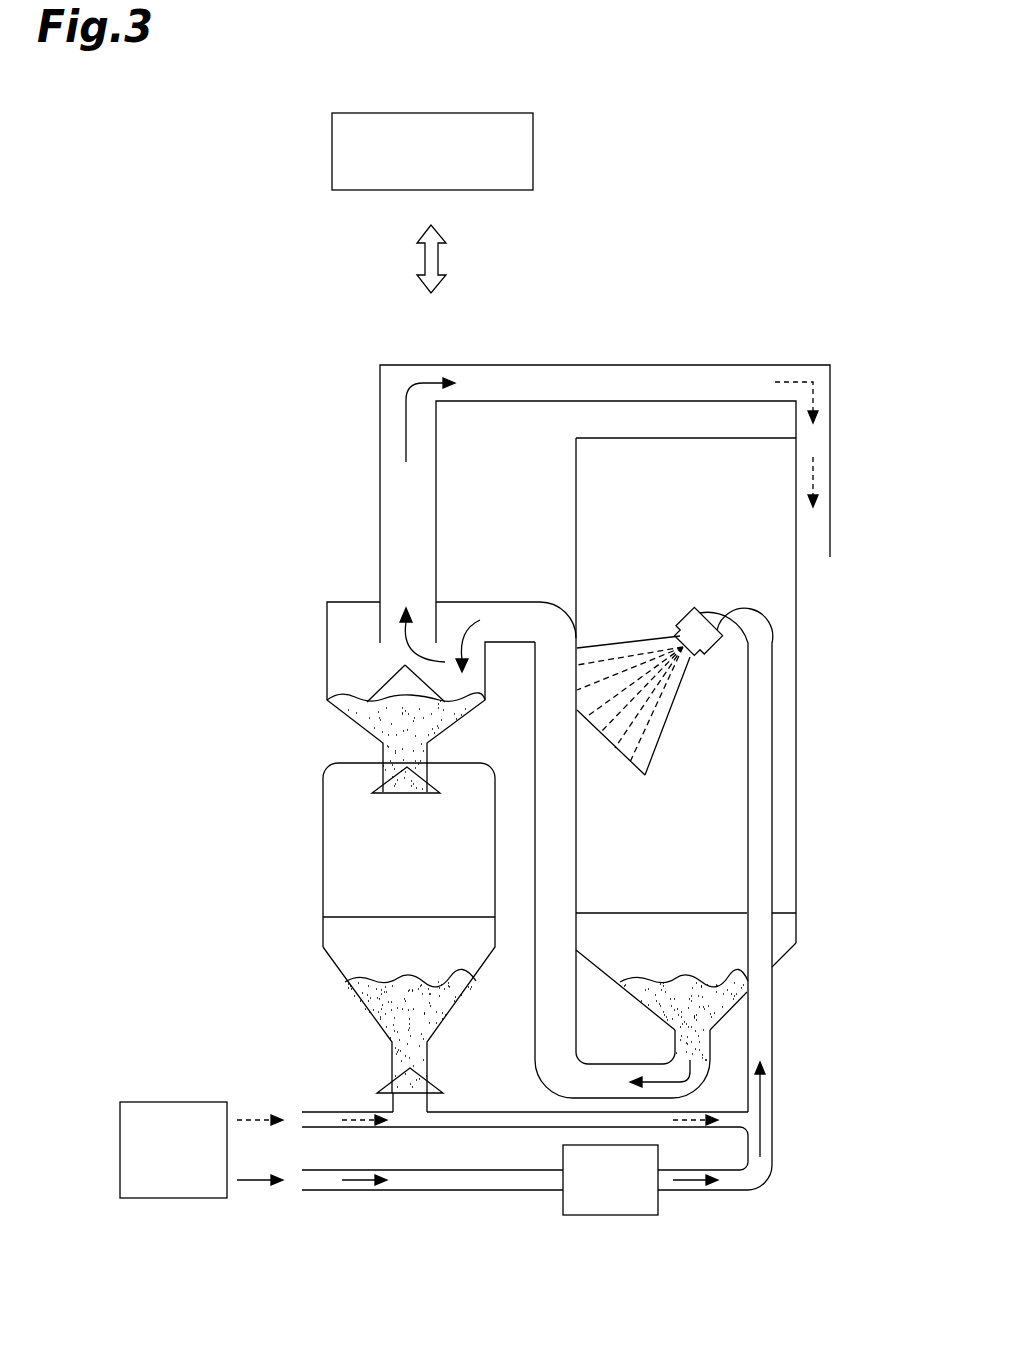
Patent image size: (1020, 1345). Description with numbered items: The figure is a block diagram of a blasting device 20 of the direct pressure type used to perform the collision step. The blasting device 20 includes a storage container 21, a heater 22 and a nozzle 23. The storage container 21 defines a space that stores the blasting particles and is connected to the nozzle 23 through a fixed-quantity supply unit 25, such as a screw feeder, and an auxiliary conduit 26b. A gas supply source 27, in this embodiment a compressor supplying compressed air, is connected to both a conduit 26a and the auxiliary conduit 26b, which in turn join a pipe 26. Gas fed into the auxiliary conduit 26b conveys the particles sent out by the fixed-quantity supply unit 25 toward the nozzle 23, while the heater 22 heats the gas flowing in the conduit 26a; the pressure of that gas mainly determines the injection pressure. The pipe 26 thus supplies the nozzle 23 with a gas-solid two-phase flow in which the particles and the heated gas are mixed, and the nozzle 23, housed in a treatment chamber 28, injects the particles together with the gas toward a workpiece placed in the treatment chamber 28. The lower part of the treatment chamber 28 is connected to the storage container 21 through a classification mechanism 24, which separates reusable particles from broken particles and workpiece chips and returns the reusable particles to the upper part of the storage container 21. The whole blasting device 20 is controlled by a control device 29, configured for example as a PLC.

The blasting device 20 is at (851, 263).
The storage container 21 is at (323, 797).
The heater 22 is at (612, 1217).
The nozzle 23 is at (698, 613).
The classification mechanism 24 is at (327, 655).
The fixed-quantity supply unit 25 is at (433, 1084).
The pipe 26 is at (772, 1045).
The conduit 26a is at (418, 1190).
The auxiliary conduit 26b is at (460, 1128).
The gas supply source 27 is at (172, 1198).
The treatment chamber 28 is at (797, 676).
The control device 29 is at (533, 148).